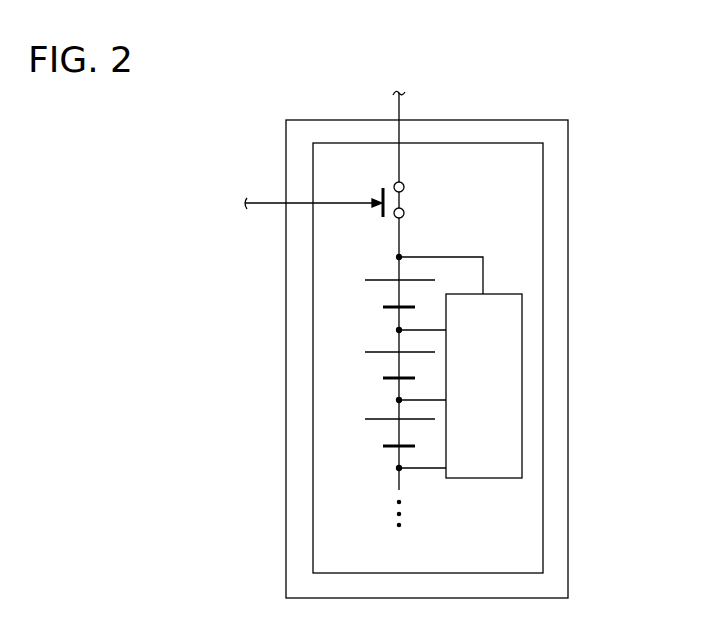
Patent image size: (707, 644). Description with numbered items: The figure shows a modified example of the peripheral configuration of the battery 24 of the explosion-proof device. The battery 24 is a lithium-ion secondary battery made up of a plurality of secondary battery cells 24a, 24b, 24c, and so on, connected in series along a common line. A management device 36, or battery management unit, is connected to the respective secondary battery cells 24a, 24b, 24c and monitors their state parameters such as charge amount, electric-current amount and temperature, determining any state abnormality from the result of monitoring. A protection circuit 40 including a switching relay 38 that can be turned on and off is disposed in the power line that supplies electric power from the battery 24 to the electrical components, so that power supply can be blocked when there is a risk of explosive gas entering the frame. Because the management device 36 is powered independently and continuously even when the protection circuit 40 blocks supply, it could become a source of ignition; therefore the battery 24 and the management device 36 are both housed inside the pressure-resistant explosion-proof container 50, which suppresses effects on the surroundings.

The battery 24 is at (588, 118).
The explosion-proof container 50 is at (568, 222).
The protection circuit 40 is at (416, 199).
The switching relay 38 is at (383, 212).
The management device 36 is at (522, 379).
The secondary battery cell 24a is at (362, 287).
The secondary battery cell 24b is at (362, 364).
The secondary battery cell 24c is at (362, 432).